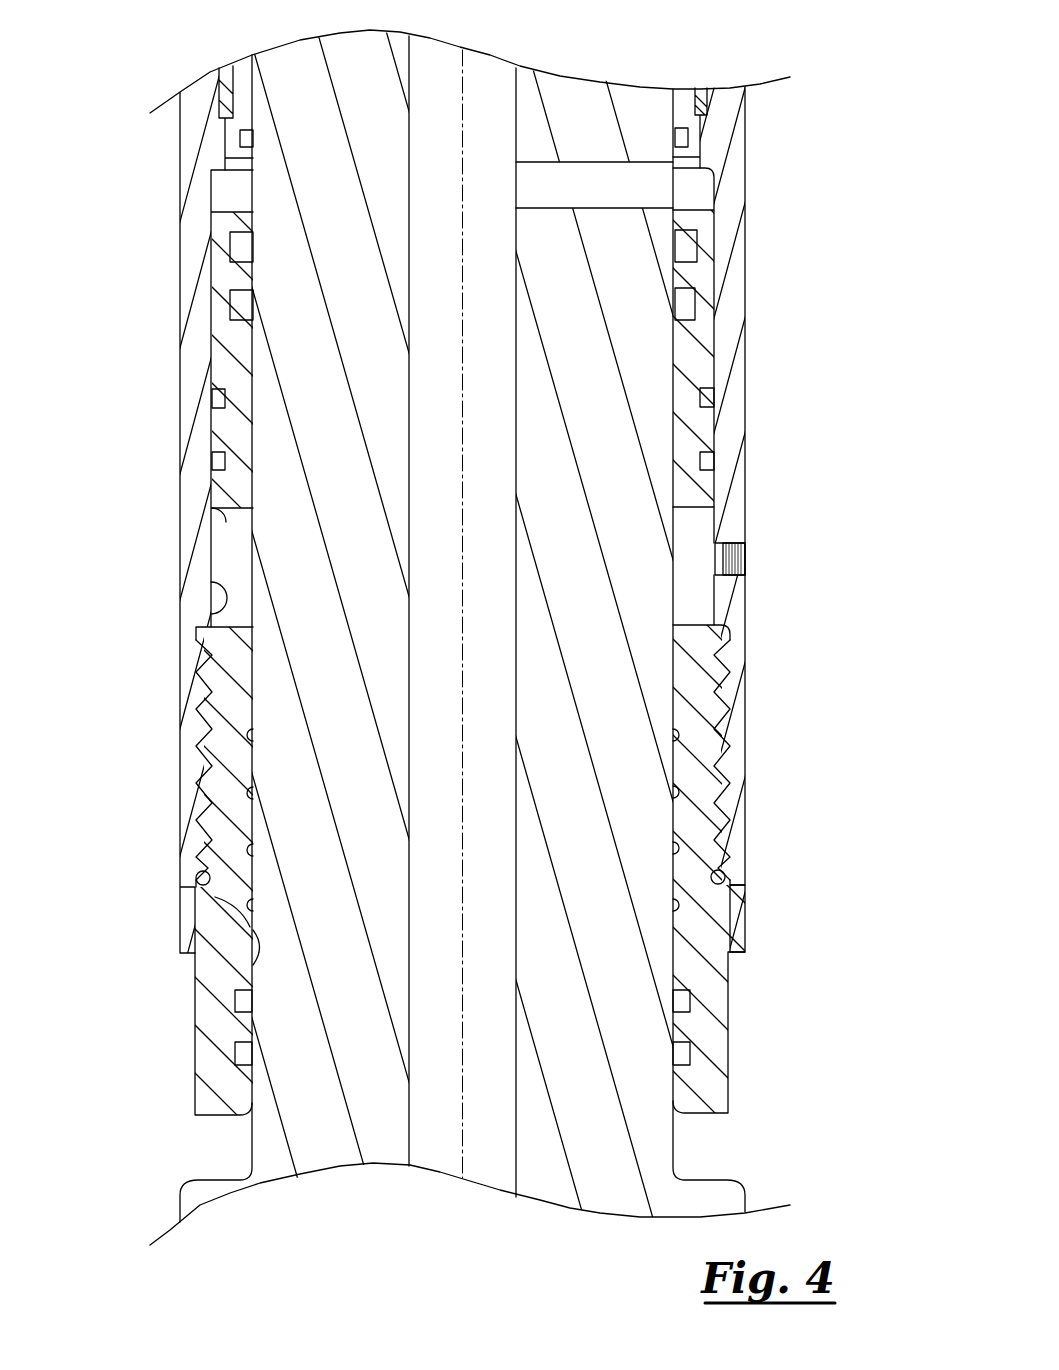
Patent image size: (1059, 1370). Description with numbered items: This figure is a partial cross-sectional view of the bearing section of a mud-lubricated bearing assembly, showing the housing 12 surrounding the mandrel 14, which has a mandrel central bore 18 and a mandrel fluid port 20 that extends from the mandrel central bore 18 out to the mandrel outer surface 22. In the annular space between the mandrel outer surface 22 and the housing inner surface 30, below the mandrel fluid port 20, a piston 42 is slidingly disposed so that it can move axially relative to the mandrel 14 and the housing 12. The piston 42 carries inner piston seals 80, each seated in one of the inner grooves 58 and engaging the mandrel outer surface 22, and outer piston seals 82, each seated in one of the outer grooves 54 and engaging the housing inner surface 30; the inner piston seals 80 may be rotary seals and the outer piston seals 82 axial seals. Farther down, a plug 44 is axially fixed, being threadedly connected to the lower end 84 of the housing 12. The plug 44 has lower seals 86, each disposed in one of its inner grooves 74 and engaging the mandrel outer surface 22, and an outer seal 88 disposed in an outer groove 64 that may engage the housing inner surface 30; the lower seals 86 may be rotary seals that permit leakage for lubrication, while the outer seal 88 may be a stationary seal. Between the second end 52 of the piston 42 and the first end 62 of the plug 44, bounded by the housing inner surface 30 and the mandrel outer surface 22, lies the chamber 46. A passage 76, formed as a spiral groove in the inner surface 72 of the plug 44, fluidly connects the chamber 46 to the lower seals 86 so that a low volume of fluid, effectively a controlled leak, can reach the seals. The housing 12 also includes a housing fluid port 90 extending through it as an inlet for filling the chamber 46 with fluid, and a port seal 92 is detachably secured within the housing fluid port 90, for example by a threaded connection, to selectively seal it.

The housing 12 is at (737, 135).
The mandrel 14 is at (303, 82).
The mandrel central bore 18 is at (490, 712).
The mandrel fluid port 20 is at (598, 177).
The mandrel outer surface 22 is at (211, 582).
The housing inner surface 30 is at (215, 620).
The piston 42 is at (703, 340).
The plug 44 is at (710, 930).
The chamber 46 is at (705, 520).
The second end 52 is at (215, 514).
The outer grooves 54 is at (710, 440).
The inner grooves 58 is at (693, 276).
The first end 62 is at (690, 625).
The outer groove 64 is at (724, 869).
The inner surface 72 is at (215, 897).
The inner grooves 74 is at (690, 1035).
The passage 76 is at (212, 775).
The inner piston seals 80 is at (232, 247).
The outer piston seals 82 is at (212, 398).
The lower end 84 is at (738, 846).
The lower seals 86 is at (236, 1001).
The outer seal 88 is at (200, 874).
The housing fluid port 90 is at (716, 556).
The port seal 92 is at (745, 557).